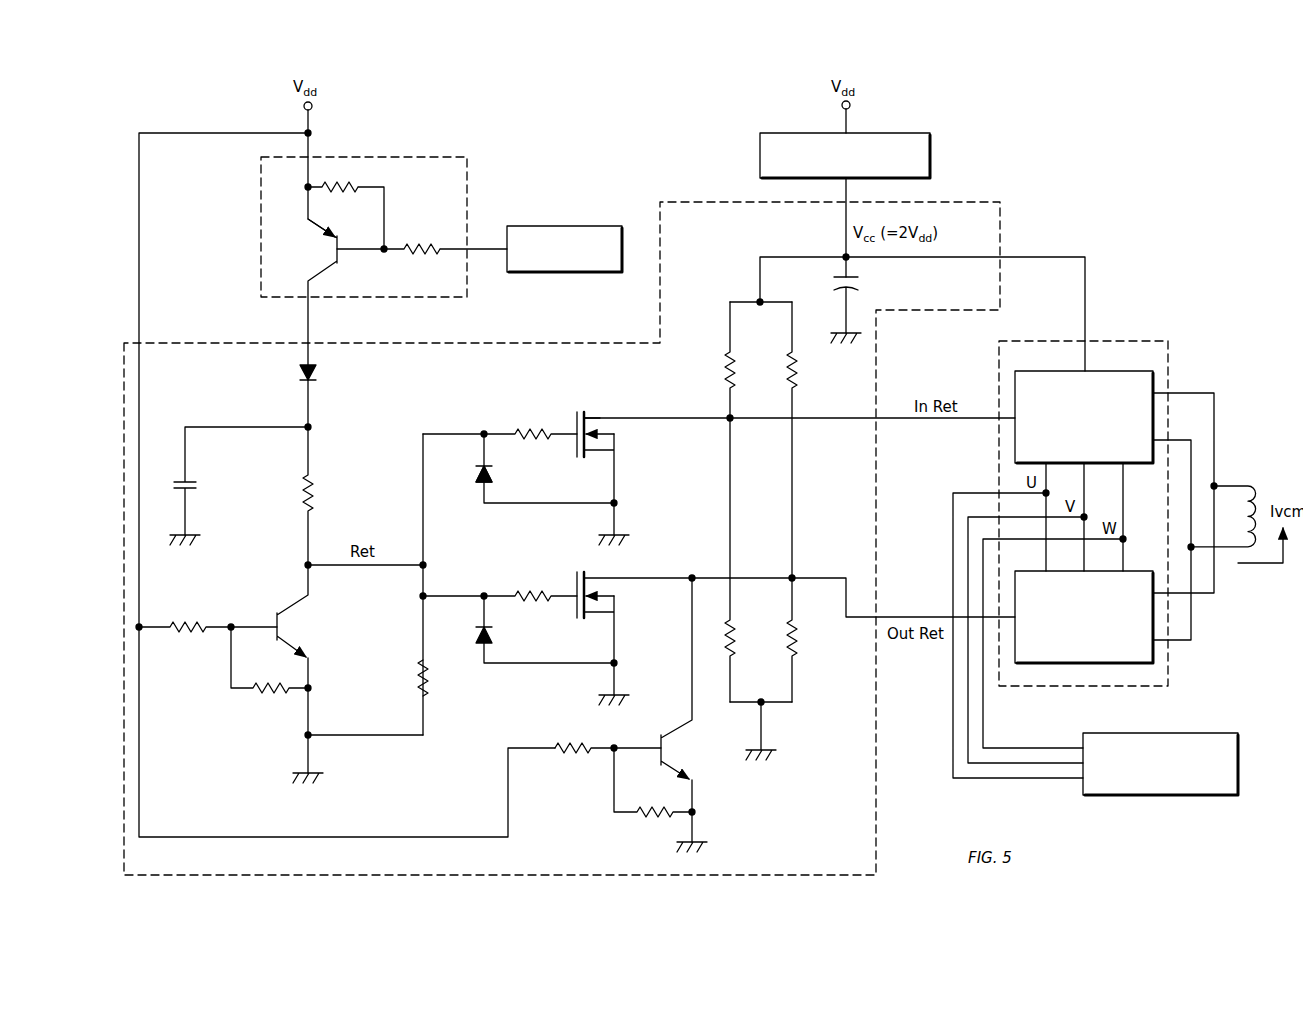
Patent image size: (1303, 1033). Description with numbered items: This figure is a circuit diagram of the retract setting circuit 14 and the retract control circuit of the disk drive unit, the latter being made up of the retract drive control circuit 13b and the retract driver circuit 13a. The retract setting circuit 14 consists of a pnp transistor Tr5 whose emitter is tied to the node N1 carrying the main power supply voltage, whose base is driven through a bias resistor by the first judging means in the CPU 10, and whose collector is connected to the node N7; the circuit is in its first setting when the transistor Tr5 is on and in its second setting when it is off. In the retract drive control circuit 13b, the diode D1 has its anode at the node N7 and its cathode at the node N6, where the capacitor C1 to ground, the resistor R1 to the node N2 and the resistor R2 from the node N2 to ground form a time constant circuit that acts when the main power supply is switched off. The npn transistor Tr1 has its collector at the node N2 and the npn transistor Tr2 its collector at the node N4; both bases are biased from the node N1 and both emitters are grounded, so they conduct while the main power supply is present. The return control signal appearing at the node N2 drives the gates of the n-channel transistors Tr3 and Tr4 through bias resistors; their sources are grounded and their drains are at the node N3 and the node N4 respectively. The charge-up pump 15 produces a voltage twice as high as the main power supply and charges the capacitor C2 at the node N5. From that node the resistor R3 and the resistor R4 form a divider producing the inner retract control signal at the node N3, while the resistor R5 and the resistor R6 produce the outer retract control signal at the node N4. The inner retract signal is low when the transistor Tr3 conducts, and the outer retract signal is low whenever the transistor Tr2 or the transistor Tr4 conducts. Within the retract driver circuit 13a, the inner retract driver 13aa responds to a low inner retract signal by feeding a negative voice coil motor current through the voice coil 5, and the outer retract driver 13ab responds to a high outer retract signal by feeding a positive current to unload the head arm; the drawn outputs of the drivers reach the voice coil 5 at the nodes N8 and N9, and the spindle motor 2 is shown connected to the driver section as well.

The spindle motor 2 is at (1239, 779).
The voice coil 5 is at (1249, 483).
The CPU 10 is at (598, 226).
The retract driver circuit 13a is at (1168, 352).
The inner retract driver 13aa is at (1084, 417).
The outer retract driver 13ab is at (1084, 617).
The retract drive control circuit 13b is at (698, 202).
The retract setting circuit 14 is at (441, 157).
The charge-up pump 15 is at (931, 160).
The node N1 is at (322, 131).
The node N2 is at (436, 561).
The node N3 is at (889, 408).
The node N4 is at (884, 605).
The node N5 is at (836, 251).
The node N6 is at (322, 423).
The node N7 is at (297, 335).
The node N8 is at (1228, 470).
The node N9 is at (1204, 554).
The npn transistor Tr1 is at (229, 674).
The npn transistor Tr2 is at (631, 715).
The n-channel transistor Tr3 is at (535, 478).
The n-channel transistor Tr4 is at (526, 625).
The pnp transistor Tr5 is at (394, 273).
The resistor R1 is at (322, 496).
The resistor R2 is at (410, 678).
The resistor R3 is at (745, 360).
The resistor R4 is at (745, 560).
The resistor R5 is at (807, 440).
The resistor R6 is at (807, 640).
The capacitor C1 is at (239, 490).
The capacitor C2 is at (858, 310).
The diode D1 is at (322, 396).